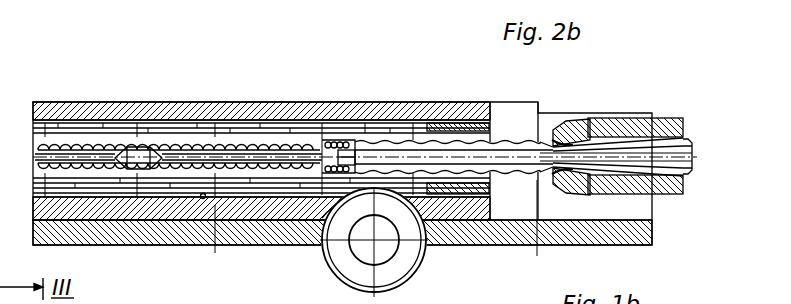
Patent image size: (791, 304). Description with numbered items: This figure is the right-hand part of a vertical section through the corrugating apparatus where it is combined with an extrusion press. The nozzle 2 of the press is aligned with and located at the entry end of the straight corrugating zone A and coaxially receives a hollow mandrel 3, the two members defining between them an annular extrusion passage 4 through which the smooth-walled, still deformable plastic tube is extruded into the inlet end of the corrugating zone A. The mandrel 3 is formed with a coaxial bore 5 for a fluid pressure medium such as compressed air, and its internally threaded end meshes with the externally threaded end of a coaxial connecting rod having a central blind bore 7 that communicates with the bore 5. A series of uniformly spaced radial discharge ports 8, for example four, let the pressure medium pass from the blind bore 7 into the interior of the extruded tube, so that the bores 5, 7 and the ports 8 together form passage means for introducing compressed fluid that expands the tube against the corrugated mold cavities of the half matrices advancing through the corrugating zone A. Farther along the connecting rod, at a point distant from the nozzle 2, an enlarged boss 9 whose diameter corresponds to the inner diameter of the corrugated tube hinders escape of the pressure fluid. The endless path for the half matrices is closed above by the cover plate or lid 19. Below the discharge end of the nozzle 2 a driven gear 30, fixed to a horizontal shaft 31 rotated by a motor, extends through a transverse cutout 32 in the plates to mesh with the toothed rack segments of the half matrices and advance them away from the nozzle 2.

The nozzle 2 is at (401, 141).
The hollow mandrel 3 is at (672, 168).
The annular extrusion passage 4 is at (617, 142).
The coaxial bore 5 is at (676, 150).
The central blind bore 7 is at (357, 142).
The radial discharge ports 8 is at (341, 146).
The enlarged portion or boss 9 is at (138, 146).
The cover plate or lid 19 is at (234, 294).
The driven gear 30 is at (424, 260).
The horizontal shaft 31 is at (358, 248).
The transverse cutout 32 is at (316, 243).
The corrugating zone A is at (203, 196).